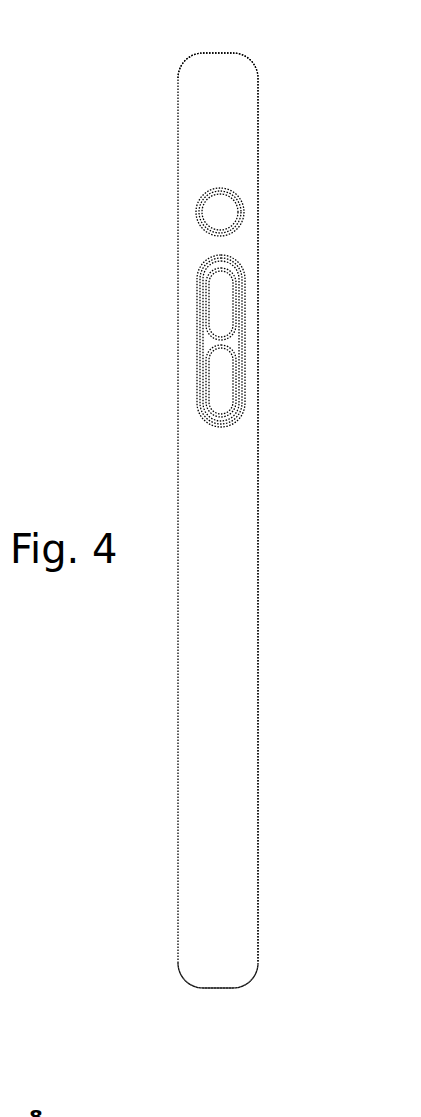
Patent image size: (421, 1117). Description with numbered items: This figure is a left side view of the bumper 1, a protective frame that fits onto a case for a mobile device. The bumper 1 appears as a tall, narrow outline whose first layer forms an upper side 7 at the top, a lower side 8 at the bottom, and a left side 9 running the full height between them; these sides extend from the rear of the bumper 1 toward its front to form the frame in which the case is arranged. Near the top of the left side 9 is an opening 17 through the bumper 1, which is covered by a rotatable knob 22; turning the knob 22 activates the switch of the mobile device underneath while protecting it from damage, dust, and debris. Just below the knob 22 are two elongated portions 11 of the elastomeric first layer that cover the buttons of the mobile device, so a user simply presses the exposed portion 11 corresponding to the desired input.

The bumper 1 is at (148, 654).
The upper side 7 is at (234, 60).
The lower side 8 is at (247, 973).
The left side 9 is at (232, 750).
The portions 11 is at (220, 310).
The opening 17 is at (207, 228).
The knob 22 is at (220, 210).